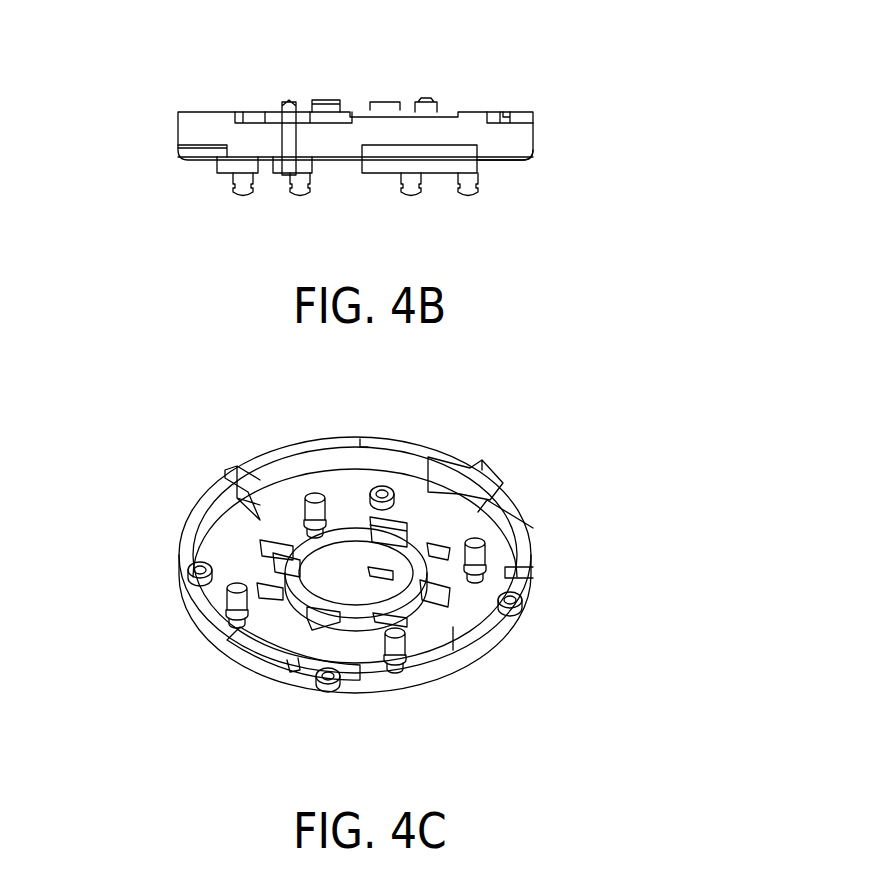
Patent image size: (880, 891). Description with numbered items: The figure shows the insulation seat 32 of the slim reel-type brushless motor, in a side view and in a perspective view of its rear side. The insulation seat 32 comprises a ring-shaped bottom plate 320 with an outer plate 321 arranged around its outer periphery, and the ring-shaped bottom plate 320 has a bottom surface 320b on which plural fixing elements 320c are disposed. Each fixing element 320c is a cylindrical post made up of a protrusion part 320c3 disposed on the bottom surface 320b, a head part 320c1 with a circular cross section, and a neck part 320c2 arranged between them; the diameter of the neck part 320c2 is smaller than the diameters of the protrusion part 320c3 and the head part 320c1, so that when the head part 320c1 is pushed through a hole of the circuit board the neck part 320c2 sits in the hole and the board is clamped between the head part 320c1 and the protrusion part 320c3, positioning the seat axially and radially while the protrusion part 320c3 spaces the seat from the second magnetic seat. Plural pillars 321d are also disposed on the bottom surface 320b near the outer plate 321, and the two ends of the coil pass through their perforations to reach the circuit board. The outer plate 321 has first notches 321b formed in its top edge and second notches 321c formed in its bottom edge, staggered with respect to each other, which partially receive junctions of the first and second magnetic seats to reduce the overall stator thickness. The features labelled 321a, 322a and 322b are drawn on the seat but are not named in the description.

In FIG. 4B, the insulation seat 32 is at (413, 126).
In FIG. 4C, the insulation seat 32 is at (410, 572).
In FIG. 4C, the ring-shaped bottom plate 320 is at (334, 478).
In FIG. 4B, the bottom surface 320b is at (515, 163).
In FIG. 4C, the bottom surface 320b is at (265, 498).
In FIG. 4C, the fixing element 320c is at (235, 608).
In FIG. 4C, the head part 320c1 is at (400, 672).
In FIG. 4C, the neck part 320c2 is at (400, 670).
In FIG. 4C, the protrusion part 320c3 is at (400, 668).
In FIG. 4B, the outer plate 321 is at (203, 112).
In FIG. 4C, the outer plate 321 is at (461, 480).
In FIG. 4B, the first ledge 321a is at (503, 110).
In FIG. 4B, the first notch 321b is at (262, 118).
In FIG. 4B, the second notch 321c is at (206, 150).
In FIG. 4C, the second notch 321c is at (507, 525).
In FIG. 4C, the pillar 321d is at (514, 606).
In FIG. 4B, the upper protrusion 322a is at (327, 100).
In FIG. 4B, the lower protrusion 322b is at (325, 173).
In FIG. 4C, the lower protrusion 322b is at (320, 620).